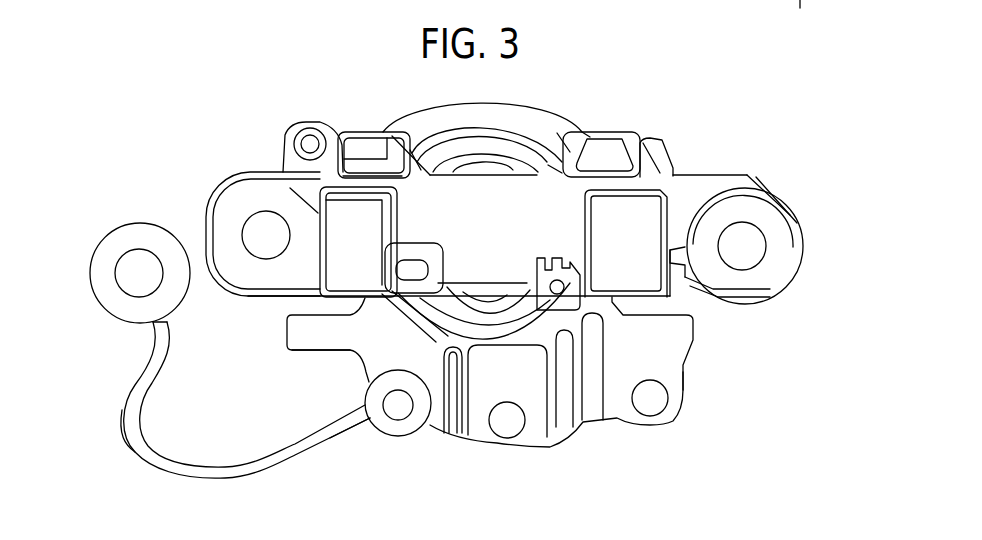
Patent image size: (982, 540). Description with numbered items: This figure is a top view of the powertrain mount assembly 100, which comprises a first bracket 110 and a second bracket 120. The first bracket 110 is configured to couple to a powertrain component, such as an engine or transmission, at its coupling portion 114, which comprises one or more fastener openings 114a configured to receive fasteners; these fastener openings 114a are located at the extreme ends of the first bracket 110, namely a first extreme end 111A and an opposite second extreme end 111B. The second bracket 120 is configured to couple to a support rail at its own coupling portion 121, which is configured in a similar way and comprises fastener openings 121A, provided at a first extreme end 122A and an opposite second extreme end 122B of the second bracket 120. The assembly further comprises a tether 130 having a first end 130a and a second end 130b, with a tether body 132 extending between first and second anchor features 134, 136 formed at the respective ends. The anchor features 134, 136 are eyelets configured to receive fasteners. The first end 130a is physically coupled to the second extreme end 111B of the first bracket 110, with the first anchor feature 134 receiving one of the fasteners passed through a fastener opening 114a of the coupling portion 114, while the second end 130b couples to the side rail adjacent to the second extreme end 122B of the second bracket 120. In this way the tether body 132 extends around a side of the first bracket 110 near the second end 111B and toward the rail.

The powertrain mount assembly 100 is at (716, 142).
The first bracket 110 is at (687, 367).
The first extreme end 111A is at (683, 387).
The second extreme end 111B is at (307, 351).
The coupling portion 114 is at (577, 420).
The fastener openings 114a is at (397, 410).
The second bracket 120 is at (750, 172).
The coupling portion 121 is at (753, 275).
The fastener openings 121A is at (766, 253).
The first extreme end 122A is at (788, 207).
The second extreme end 122B is at (240, 172).
The tether 130 is at (160, 484).
The first end 130a is at (370, 427).
The second end 130b is at (173, 315).
The tether body 132 is at (124, 424).
The first anchor feature 134 is at (367, 390).
The second anchor feature 136 is at (127, 228).